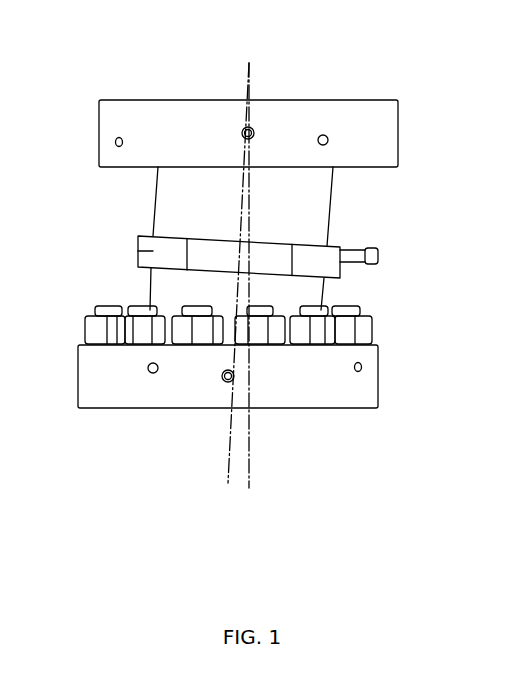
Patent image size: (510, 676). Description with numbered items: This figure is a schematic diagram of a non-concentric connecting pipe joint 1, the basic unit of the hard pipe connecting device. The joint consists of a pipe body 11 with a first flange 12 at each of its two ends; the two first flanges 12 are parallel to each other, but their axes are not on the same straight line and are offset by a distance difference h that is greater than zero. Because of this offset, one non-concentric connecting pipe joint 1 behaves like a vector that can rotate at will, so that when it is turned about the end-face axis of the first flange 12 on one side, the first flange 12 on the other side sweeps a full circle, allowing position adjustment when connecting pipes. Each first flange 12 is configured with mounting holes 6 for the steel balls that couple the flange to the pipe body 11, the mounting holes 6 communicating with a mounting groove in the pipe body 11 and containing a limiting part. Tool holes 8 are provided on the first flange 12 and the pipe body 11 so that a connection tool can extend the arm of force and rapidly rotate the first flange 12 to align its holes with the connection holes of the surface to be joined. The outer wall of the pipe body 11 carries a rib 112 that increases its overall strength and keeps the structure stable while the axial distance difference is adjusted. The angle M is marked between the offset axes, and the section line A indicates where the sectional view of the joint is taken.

The non-concentric connecting pipe joint 1 is at (93, 240).
The mounting hole 6 is at (243, 128).
The tool hole 8 is at (115, 140).
The pipe body 11 is at (296, 230).
The first flange 12 is at (362, 141).
The rib 112 is at (138, 252).
The tilt angle M is at (231, 361).
The distance difference h is at (228, 473).
The section line A- A is at (248, 63).